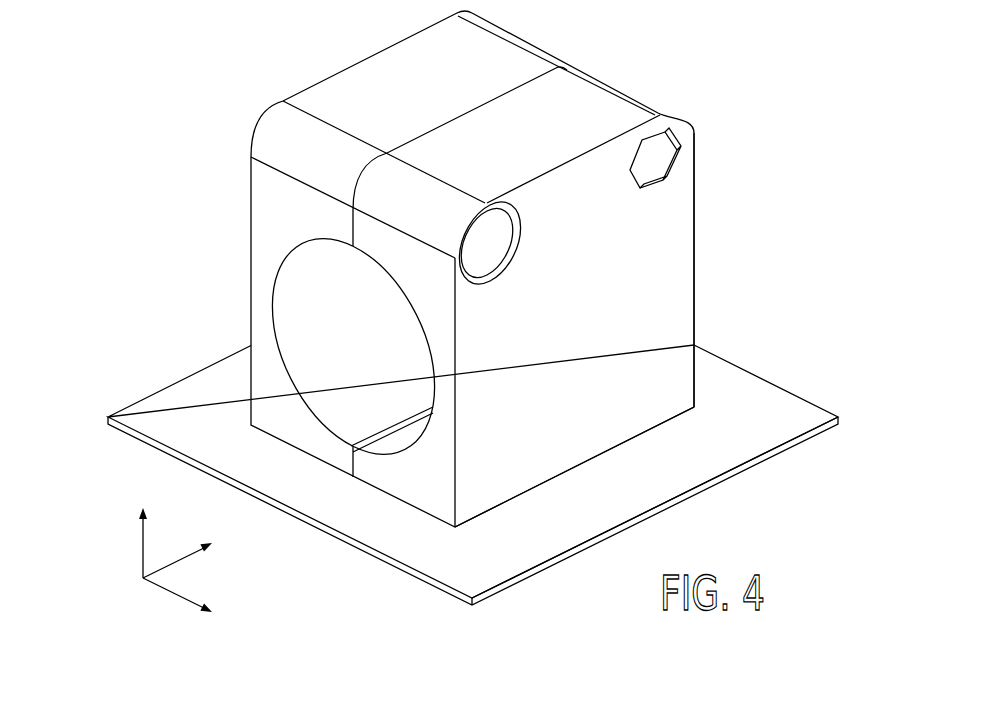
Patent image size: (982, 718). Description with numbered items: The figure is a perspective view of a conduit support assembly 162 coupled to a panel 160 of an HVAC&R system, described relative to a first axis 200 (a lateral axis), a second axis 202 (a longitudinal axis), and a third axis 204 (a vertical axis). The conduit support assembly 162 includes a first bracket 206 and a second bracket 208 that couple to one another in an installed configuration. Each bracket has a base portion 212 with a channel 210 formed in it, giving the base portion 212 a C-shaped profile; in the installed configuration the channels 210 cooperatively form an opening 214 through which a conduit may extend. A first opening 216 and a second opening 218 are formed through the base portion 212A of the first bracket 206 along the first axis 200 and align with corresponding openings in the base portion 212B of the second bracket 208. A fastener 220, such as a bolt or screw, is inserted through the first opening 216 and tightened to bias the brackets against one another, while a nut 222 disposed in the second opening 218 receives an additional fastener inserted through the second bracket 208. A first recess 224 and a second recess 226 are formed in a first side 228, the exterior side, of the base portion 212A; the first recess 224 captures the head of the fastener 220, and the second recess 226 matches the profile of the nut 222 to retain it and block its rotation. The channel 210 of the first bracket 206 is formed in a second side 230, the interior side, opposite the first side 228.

The conduit support assembly 162 is at (237, 77).
The second bracket 208 is at (386, 58).
The first bracket 206 is at (632, 95).
The base portion 212 is at (435, 342).
The base portion of the second bracket 212B is at (233, 186).
The base portion of the first bracket 212A is at (633, 431).
The channel 210 is at (315, 272).
The opening 214 is at (321, 368).
The second side 230 is at (342, 404).
The fastener 220 is at (506, 230).
The first recess 224 is at (503, 268).
The first opening 216 is at (506, 290).
The nut 222 is at (660, 157).
The second opening 218 is at (676, 183).
The second recess 226 is at (653, 190).
The panel 160 is at (160, 393).
The first side 228 is at (614, 503).
The third axis 204 is at (143, 545).
The second axis 202 is at (177, 565).
The first axis 200 is at (168, 596).